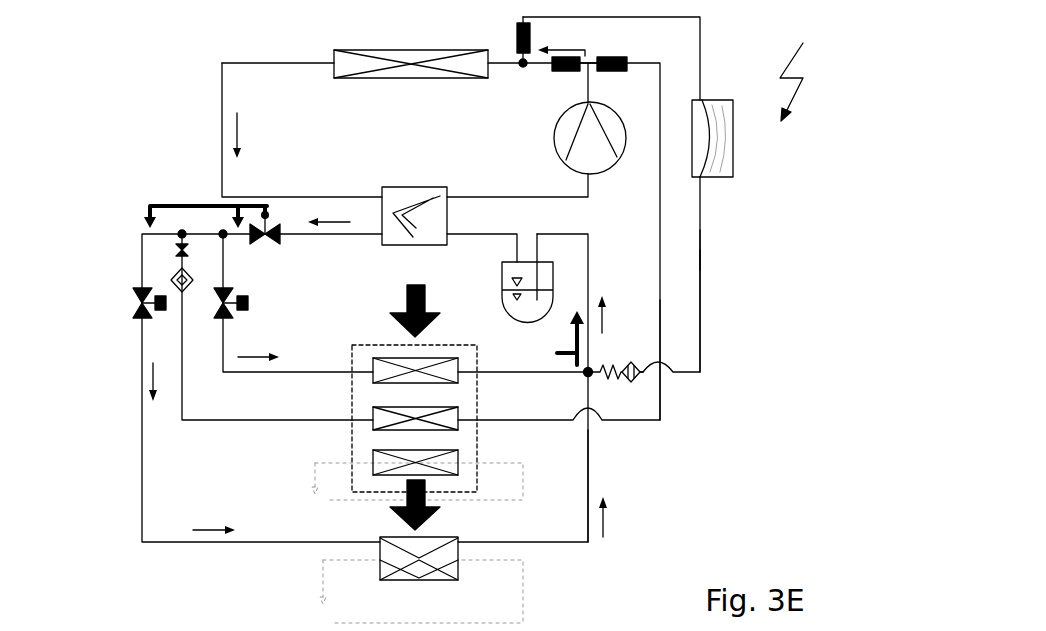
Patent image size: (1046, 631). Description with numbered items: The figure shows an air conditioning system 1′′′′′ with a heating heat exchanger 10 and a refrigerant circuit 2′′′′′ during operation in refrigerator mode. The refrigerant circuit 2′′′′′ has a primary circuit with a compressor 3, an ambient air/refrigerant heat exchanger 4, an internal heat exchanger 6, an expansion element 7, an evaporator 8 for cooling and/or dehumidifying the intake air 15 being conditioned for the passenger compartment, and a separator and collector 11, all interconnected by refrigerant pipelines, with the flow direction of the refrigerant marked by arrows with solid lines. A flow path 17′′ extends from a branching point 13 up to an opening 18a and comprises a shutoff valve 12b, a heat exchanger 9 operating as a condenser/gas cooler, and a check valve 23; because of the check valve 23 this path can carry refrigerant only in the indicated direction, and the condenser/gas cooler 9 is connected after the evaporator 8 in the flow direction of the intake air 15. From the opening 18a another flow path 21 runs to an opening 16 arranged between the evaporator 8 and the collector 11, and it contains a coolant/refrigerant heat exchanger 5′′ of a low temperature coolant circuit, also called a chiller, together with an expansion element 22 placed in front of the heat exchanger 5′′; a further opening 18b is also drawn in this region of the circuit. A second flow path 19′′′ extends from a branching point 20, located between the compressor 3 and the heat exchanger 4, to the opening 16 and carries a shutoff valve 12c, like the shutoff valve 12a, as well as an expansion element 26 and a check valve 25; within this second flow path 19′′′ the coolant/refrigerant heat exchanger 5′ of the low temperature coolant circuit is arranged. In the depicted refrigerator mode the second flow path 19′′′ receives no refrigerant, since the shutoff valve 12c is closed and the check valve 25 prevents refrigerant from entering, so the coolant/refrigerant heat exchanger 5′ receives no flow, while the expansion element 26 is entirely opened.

The air conditioning system 1′′′′′ is at (818, 67).
The refrigerant circuit 2′′′′′ is at (726, 249).
The compressor 3 is at (557, 150).
The ambient air/refrigerant heat exchanger 4 is at (343, 63).
The coolant/refrigerant heat exchanger 5′ is at (728, 170).
The coolant/refrigerant heat exchanger 5′′ is at (458, 576).
The internal heat exchanger 6 is at (425, 195).
The expansion element 7 is at (248, 303).
The evaporator 8 is at (385, 372).
The heat exchanger operating as condenser/gas cooler 9 is at (385, 420).
The heating heat exchanger 10 is at (455, 462).
The separator and collector 11 is at (510, 310).
The shutoff valve 12a is at (552, 68).
The shutoff valve 12b is at (630, 58).
The shutoff valve 12c is at (517, 38).
The branching point 13 is at (588, 66).
The intake air 15 is at (405, 303).
The opening 16 is at (585, 374).
The flow path 17′′ is at (663, 387).
The opening 18a is at (178, 237).
The branch point 18b is at (226, 237).
The second flow path 19′′′ is at (703, 333).
The branching point 20 is at (520, 66).
The flow path 21 is at (590, 452).
The expansion element 22 is at (133, 310).
The check valve 23 is at (190, 290).
The check valve 25 is at (629, 364).
The expansion element 26 is at (270, 212).